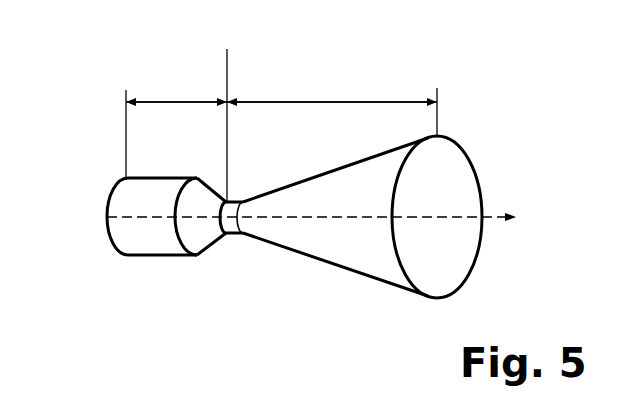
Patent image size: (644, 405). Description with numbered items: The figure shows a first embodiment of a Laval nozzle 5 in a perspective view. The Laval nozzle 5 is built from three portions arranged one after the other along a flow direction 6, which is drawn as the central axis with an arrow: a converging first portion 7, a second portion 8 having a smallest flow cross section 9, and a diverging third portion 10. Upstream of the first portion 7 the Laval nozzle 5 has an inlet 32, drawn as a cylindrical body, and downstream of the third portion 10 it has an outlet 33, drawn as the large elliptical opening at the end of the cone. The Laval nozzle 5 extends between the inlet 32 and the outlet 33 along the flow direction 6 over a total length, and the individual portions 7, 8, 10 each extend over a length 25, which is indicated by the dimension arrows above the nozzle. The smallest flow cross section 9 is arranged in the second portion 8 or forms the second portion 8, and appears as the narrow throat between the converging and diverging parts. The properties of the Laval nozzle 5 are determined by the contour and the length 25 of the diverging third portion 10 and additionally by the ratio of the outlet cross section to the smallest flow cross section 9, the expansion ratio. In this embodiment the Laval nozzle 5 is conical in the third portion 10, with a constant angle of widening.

The Laval nozzle 5 is at (517, 103).
The flow direction 6 is at (293, 220).
The converging first portion 7 is at (153, 100).
The second portion 8 is at (227, 72).
The smallest flow cross section 9 is at (235, 223).
The diverging third portion 10 is at (346, 100).
The length 25 is at (191, 100).
The inlet 32 is at (107, 242).
The outlet 33 is at (463, 175).